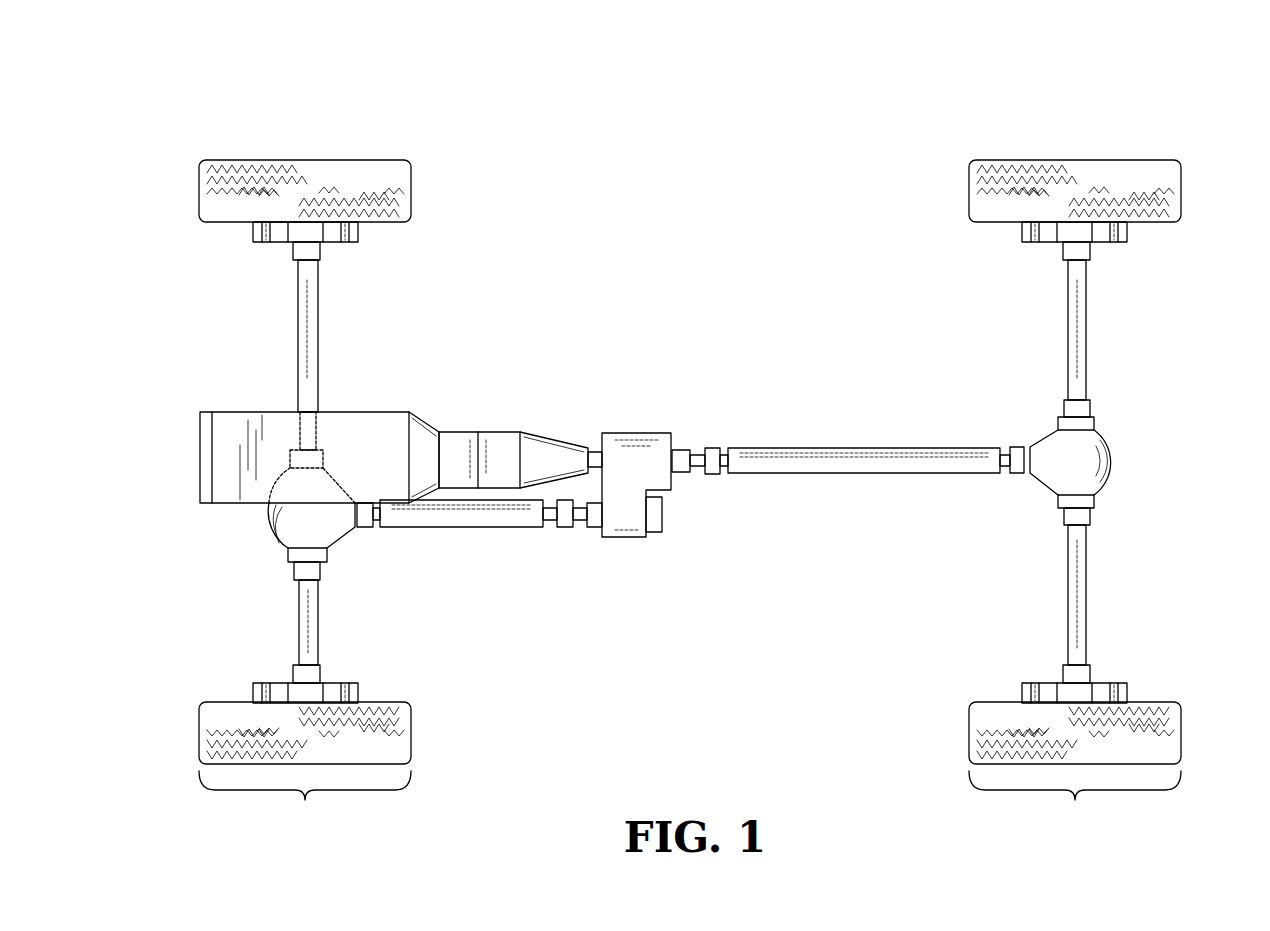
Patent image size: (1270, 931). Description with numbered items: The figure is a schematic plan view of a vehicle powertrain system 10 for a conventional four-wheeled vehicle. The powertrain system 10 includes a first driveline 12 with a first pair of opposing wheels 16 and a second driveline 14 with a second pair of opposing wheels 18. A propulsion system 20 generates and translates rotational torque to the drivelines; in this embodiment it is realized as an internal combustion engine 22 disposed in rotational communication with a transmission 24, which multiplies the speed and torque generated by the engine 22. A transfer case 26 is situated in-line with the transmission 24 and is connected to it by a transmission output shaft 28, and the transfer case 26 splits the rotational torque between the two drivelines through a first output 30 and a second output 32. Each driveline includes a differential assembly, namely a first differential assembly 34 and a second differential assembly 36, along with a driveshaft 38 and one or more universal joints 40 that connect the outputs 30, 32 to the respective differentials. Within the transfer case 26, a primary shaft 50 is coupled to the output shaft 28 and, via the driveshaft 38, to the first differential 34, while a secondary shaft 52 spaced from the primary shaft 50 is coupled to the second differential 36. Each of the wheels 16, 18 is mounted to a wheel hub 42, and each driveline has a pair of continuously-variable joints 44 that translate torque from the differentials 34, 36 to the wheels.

The vehicle powertrain system 10 is at (152, 138).
The first driveline 12 is at (1075, 799).
The second driveline 14 is at (305, 799).
The first pair of opposing wheels 16 is at (1165, 175).
The second pair of opposing wheels 18 is at (400, 175).
The propulsion system 20 is at (373, 411).
The internal combustion engine 22 is at (226, 430).
The transmission 24 is at (496, 445).
The transfer case 26 is at (637, 471).
The transmission output shaft 28 is at (596, 448).
The first output 30 is at (690, 446).
The second output 32 is at (580, 528).
The first differential assembly 34 is at (1085, 455).
The second differential assembly 36 is at (300, 518).
The driveshaft 38 is at (870, 470).
The universal joints 40 is at (1018, 455).
The wheel hub 42 is at (335, 232).
The continuously-variable joints 44 is at (302, 308).
The primary shaft 50 is at (680, 472).
The secondary shaft 52 is at (600, 530).